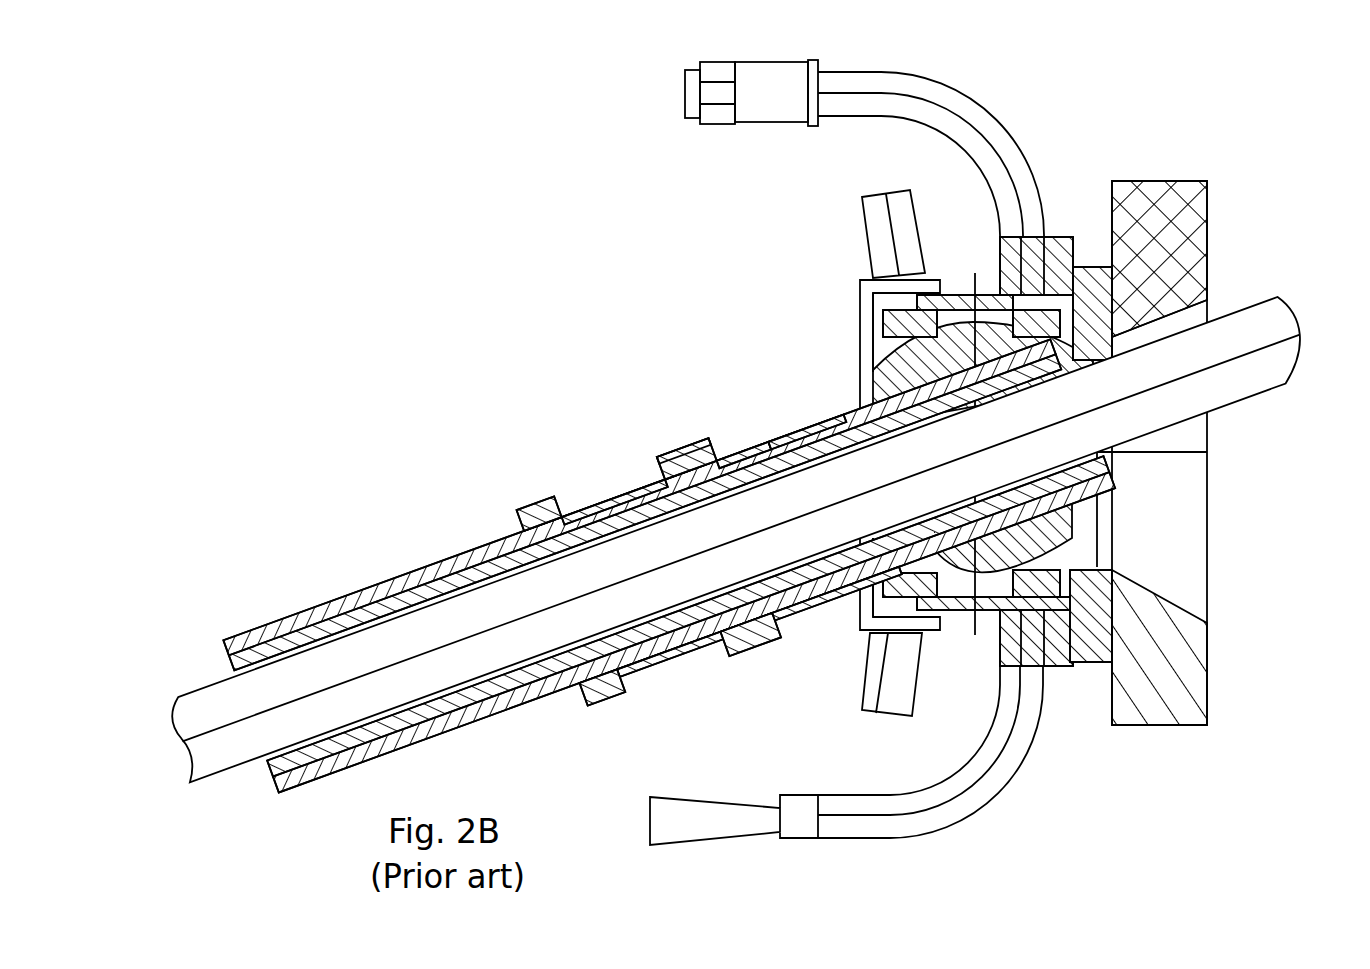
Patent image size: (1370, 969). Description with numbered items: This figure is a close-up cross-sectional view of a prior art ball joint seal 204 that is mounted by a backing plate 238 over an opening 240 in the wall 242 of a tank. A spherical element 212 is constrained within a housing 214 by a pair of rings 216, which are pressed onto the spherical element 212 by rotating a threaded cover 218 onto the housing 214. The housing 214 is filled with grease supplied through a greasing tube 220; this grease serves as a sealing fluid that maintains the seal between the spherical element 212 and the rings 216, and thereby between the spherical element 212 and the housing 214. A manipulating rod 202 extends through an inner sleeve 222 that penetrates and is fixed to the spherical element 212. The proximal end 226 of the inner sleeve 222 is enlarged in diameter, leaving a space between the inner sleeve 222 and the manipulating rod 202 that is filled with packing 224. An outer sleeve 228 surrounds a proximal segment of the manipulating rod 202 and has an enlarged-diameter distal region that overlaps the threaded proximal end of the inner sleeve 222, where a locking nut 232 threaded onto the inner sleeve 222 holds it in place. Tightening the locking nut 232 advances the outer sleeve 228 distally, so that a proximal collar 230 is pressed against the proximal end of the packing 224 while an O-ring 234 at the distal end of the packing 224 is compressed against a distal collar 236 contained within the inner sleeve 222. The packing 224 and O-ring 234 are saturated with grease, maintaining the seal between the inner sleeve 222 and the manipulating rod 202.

The manipulating rod 202 is at (1143, 370).
The ball joint seal 204 is at (850, 282).
The spherical element 212 is at (928, 365).
The housing 214 is at (1170, 182).
The rings 216 is at (862, 322).
The threaded cover 218 is at (867, 367).
The greasing tube 220 is at (1013, 140).
The inner sleeve 222 is at (1180, 290).
The packing 224 is at (633, 490).
The proximal end of the inner sleeve 226 is at (640, 470).
The outer sleeve 228 is at (377, 587).
The proximal collar 230 is at (527, 513).
The locking nut 232 is at (673, 453).
The O-ring 234 is at (703, 440).
The distal collar 236 is at (763, 445).
The backing plate 238 is at (1200, 207).
The opening 240 is at (1180, 526).
The wall 242 is at (1150, 727).